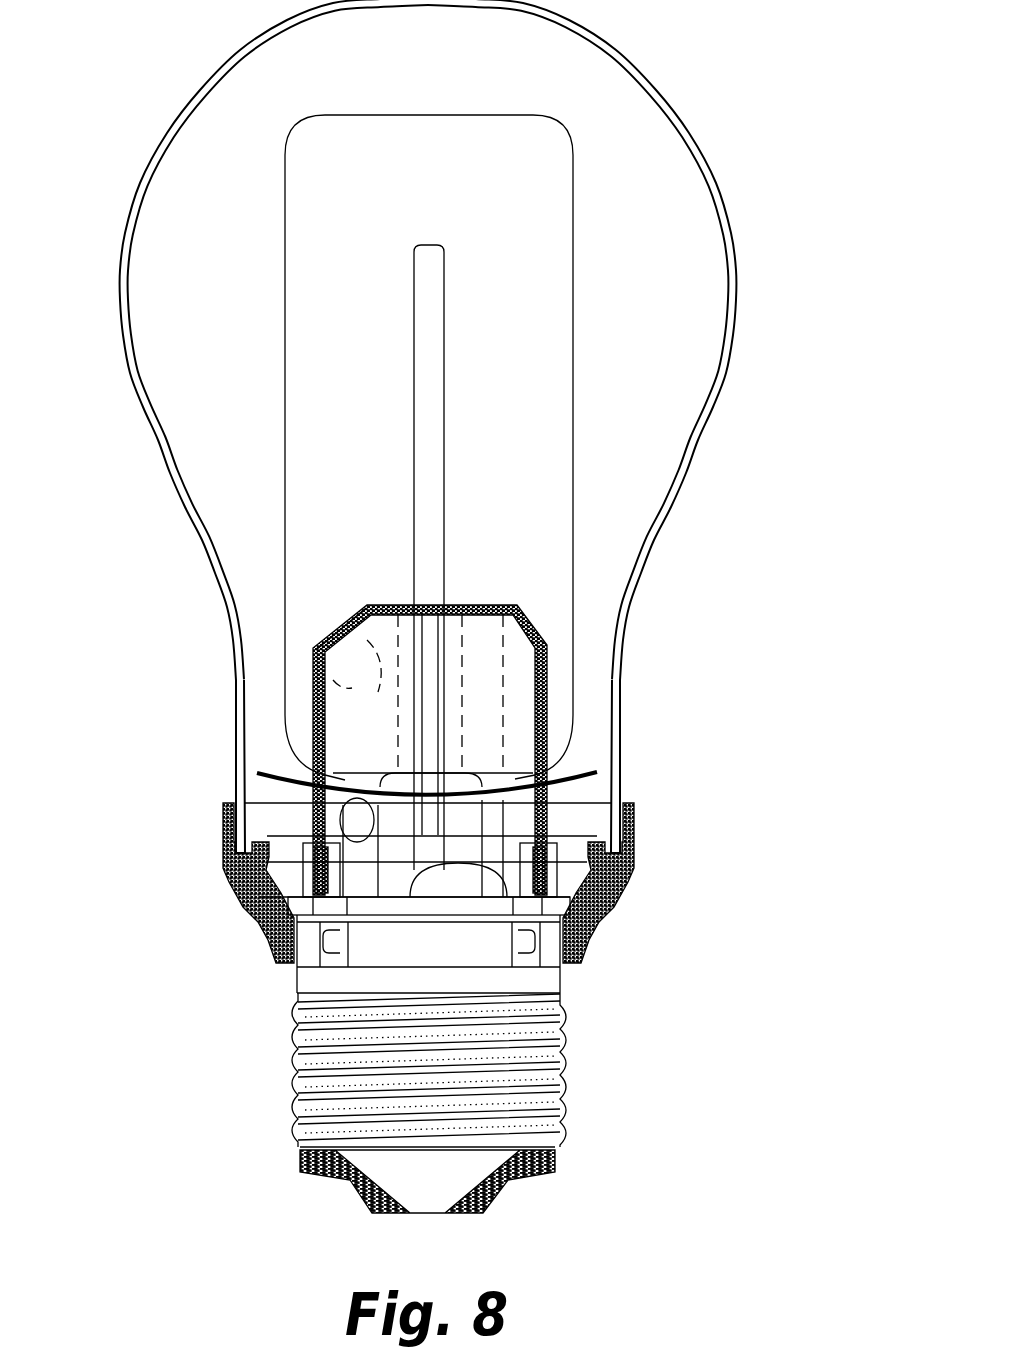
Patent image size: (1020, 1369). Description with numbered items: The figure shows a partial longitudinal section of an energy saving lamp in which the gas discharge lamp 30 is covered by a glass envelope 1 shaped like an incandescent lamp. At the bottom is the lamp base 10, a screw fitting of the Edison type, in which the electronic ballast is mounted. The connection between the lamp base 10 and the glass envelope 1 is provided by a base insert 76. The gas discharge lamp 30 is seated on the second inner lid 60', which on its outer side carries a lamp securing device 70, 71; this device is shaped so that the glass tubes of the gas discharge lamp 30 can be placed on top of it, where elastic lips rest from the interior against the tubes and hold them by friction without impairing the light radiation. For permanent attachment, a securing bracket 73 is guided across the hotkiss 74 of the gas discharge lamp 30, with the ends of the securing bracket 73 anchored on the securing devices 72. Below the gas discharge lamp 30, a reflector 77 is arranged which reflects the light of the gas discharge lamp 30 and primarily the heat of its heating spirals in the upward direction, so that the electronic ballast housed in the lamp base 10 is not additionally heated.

The glass envelope 1 is at (716, 416).
The gas discharge lamp 30 is at (535, 516).
The lamp securing device 71 is at (426, 702).
The securing bracket 73 is at (547, 706).
The hotkiss 74 is at (338, 662).
The reflector 77 is at (265, 791).
The base insert 76 is at (634, 853).
The securing devices 72 is at (565, 844).
The lamp securing device 70 is at (388, 838).
The second inner lid 60' is at (342, 998).
The lamp base 10 is at (575, 1075).